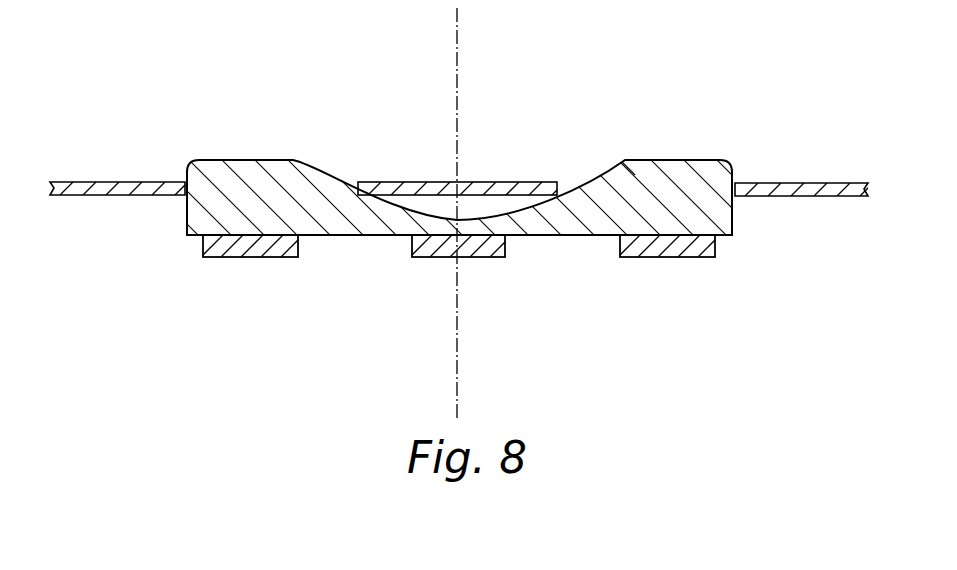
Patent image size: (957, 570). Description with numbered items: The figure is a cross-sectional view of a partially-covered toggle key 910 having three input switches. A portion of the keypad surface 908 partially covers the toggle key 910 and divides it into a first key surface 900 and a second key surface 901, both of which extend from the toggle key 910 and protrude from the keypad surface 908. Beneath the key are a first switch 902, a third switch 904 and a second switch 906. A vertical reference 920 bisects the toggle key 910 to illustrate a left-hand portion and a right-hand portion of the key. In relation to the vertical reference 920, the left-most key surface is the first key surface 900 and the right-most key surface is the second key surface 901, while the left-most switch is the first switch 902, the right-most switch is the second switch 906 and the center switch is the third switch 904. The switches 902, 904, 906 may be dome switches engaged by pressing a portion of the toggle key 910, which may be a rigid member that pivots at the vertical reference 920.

The first key surface 900 is at (245, 160).
The second key surface 901 is at (695, 160).
The first switch 902 is at (235, 257).
The third switch 904 is at (432, 257).
The second switch 906 is at (665, 257).
The keypad surface 908 is at (458, 182).
The toggle key 910 is at (620, 162).
The vertical reference 920 is at (457, 70).